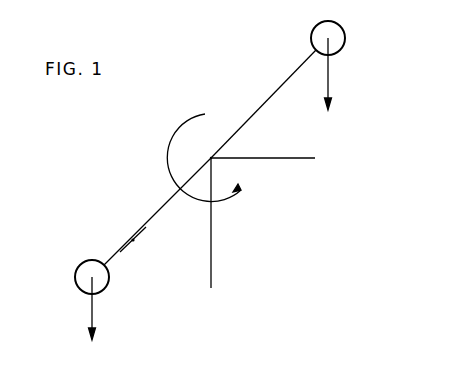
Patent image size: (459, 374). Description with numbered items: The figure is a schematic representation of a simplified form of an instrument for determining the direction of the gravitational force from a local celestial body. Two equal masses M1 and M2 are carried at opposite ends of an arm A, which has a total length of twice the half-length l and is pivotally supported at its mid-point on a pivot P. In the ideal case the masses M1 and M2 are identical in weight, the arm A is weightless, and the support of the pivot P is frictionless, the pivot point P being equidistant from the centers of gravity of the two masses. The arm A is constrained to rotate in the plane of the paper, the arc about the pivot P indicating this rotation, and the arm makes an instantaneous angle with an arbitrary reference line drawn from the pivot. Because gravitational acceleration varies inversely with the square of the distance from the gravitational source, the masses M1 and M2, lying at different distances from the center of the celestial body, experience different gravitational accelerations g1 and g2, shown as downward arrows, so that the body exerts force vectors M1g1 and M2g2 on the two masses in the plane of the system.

The mass M1 is at (75, 270).
The mass M2 is at (346, 34).
The gravitational acceleration g1 is at (94, 317).
The gravitational acceleration g2 is at (331, 81).
The half arm length l is at (149, 218).
The arm A is at (133, 241).
The pivot P is at (211, 158).